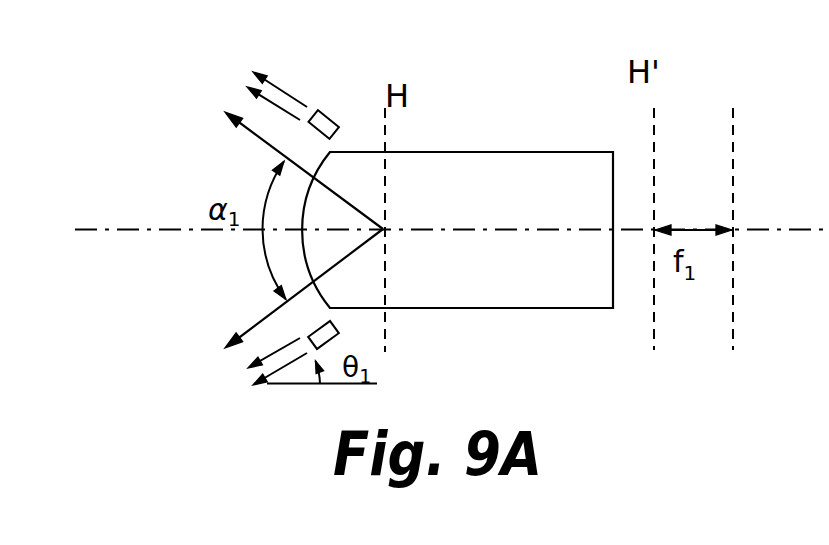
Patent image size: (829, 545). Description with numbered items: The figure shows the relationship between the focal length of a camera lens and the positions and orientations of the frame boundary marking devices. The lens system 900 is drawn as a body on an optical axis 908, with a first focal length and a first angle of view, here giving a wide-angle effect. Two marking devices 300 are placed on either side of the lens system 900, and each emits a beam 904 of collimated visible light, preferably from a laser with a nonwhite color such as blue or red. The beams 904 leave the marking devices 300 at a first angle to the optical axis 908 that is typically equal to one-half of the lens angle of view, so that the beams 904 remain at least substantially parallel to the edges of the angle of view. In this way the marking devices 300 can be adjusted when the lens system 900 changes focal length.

The marking devices 300 is at (333, 112).
The lens system 900 is at (487, 152).
The beams 904 is at (257, 85).
The optical axis 908 is at (120, 233).